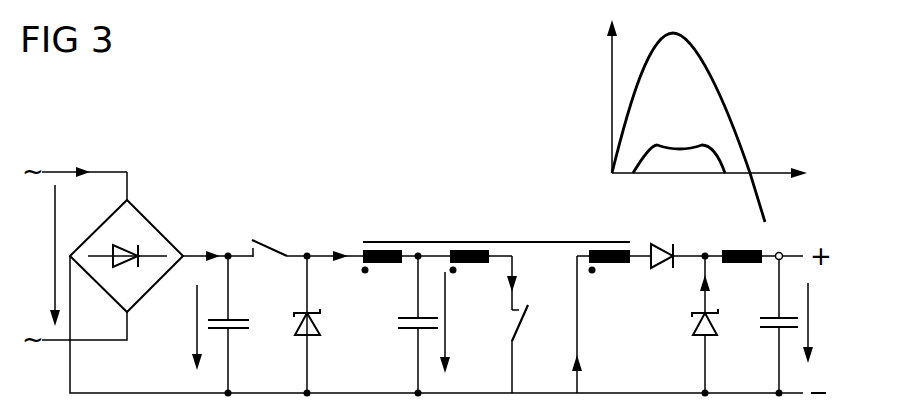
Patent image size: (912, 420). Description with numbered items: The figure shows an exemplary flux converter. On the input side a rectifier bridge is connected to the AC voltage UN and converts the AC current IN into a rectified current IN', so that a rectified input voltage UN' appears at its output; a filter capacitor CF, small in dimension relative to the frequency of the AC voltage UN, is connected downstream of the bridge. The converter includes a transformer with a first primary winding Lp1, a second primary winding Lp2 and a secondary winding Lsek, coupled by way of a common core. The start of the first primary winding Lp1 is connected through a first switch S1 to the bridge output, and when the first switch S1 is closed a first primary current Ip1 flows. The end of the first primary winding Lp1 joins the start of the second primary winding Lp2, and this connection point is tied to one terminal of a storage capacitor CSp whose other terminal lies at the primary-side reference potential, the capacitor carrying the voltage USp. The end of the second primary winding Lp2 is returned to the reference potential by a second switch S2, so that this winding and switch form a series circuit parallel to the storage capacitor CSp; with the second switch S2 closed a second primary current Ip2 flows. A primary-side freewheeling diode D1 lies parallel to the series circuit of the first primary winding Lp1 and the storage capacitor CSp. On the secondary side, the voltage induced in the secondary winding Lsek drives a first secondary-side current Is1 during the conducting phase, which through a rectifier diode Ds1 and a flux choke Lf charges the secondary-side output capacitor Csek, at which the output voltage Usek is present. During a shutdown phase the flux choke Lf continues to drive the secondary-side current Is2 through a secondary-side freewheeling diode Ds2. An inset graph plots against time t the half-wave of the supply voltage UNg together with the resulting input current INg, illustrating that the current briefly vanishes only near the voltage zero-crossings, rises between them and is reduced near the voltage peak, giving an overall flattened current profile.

The AC current IN is at (84, 159).
The AC voltage UN is at (39, 255).
The rectified current IN' is at (210, 235).
The rectified input voltage UN' is at (180, 327).
The filter capacitor CF is at (240, 318).
The first switch S1 is at (268, 245).
The primary-side freewheeling diode D1 is at (300, 325).
The first primary current Ip1 is at (335, 237).
The first primary winding Lp1 is at (382, 263).
The storage capacitor CSp is at (398, 325).
The voltage at the storage capacitor USp is at (467, 322).
The second primary winding Lp2 is at (470, 263).
The second primary current Ip2 is at (519, 283).
The second switch S2 is at (522, 330).
The secondary winding Lsek is at (608, 263).
The first secondary-side current Is1 is at (594, 324).
The rectifier diode Ds1 is at (660, 243).
The secondary-side current Is2 is at (722, 283).
The secondary-side freewheeling diode Ds2 is at (690, 325).
The flux choke Lf is at (745, 248).
The secondary-side output capacitor Csek is at (770, 330).
The output voltage Usek is at (835, 323).
The time axis t is at (795, 192).
The input voltage waveform UNg is at (718, 93).
The input current waveform INg is at (677, 147).